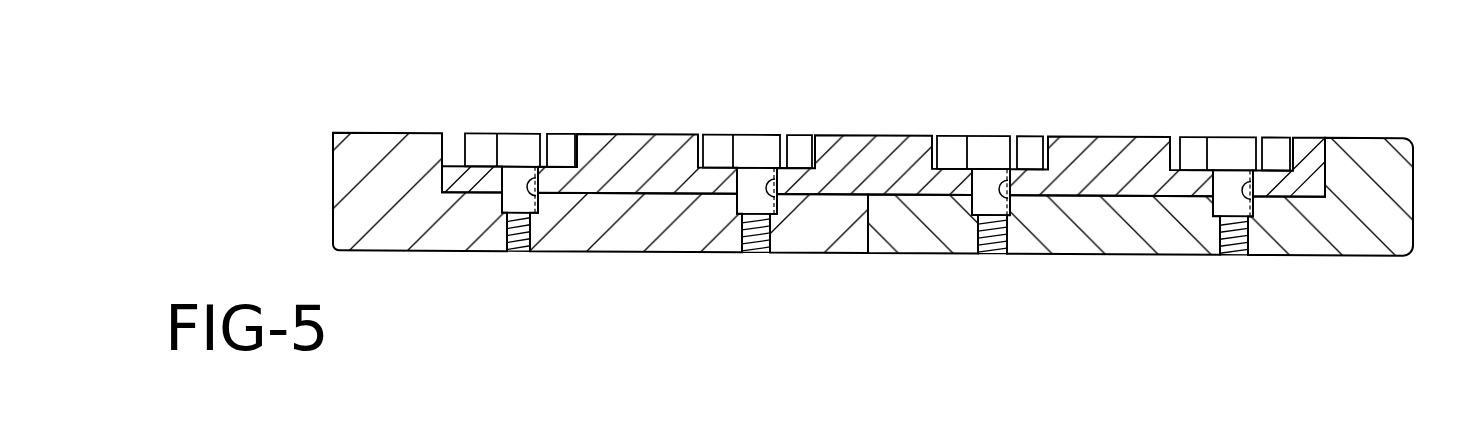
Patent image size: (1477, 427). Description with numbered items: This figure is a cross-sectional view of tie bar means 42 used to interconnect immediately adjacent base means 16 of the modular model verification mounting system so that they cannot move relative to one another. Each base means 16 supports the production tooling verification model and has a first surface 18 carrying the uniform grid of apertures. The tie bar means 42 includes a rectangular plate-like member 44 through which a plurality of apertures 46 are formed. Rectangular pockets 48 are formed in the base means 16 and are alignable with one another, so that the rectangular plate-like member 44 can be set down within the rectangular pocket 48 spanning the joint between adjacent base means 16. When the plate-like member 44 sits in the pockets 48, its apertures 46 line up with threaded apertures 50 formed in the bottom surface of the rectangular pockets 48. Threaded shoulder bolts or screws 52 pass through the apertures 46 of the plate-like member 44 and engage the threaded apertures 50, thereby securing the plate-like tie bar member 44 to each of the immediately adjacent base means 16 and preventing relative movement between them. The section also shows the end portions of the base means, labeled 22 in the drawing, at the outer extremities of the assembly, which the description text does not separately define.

The base means 16 is at (393, 252).
The first surface 18 is at (382, 133).
The end block 22 is at (1408, 192).
The tie bar means 42 is at (874, 140).
The rectangular plate-like member 44 is at (882, 147).
The apertures 46 is at (541, 205).
The rectangular pockets 48 is at (450, 163).
The threaded apertures 50 is at (507, 229).
The threaded shoulder bolts or screws 52 is at (879, 183).